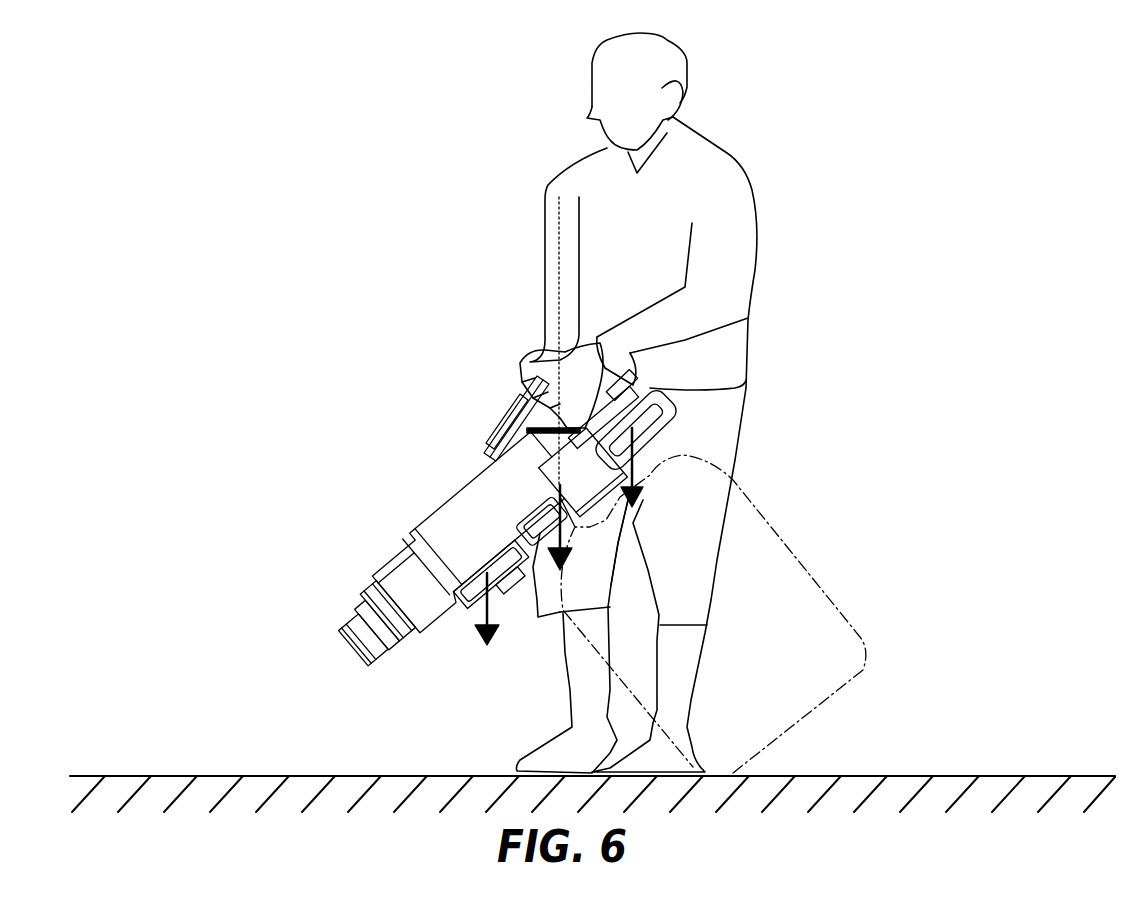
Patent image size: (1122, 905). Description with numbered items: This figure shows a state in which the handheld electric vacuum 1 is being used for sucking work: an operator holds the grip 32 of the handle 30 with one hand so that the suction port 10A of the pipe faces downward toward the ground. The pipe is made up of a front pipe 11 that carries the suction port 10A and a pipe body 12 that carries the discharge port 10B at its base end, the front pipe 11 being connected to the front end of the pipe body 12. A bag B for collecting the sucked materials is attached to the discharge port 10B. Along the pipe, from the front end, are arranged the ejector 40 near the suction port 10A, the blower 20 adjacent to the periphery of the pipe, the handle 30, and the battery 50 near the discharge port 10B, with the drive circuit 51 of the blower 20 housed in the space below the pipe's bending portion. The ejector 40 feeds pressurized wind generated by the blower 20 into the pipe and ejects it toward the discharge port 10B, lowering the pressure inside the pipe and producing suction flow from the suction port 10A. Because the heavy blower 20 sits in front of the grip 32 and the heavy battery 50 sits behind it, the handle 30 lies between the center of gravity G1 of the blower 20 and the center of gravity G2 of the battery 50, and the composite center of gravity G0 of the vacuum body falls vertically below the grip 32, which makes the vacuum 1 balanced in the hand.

The handheld electric vacuum 1 is at (533, 510).
The suction port 10A is at (343, 675).
The discharge port 10B is at (614, 570).
The front pipe 11 is at (350, 617).
The pipe body 12 is at (470, 478).
The blower 20 is at (510, 657).
The handle 30 is at (517, 393).
The grip 32 is at (514, 392).
The ejector 40 is at (357, 578).
The battery 50 is at (672, 407).
The drive circuit 51 is at (538, 618).
The center of gravity G0 is at (487, 467).
The center of gravity of the blower G1 is at (470, 592).
The center of gravity of the battery G2 is at (636, 432).
The bag B is at (794, 547).